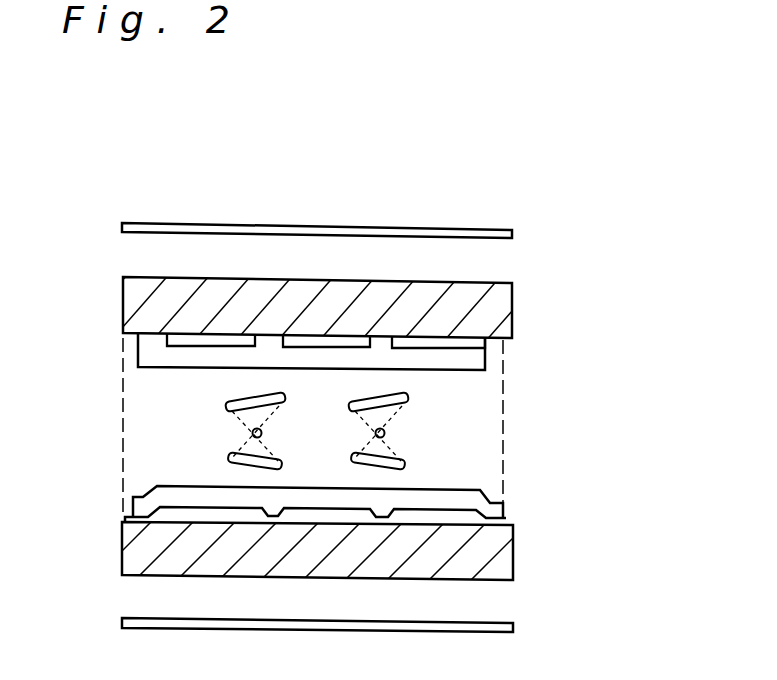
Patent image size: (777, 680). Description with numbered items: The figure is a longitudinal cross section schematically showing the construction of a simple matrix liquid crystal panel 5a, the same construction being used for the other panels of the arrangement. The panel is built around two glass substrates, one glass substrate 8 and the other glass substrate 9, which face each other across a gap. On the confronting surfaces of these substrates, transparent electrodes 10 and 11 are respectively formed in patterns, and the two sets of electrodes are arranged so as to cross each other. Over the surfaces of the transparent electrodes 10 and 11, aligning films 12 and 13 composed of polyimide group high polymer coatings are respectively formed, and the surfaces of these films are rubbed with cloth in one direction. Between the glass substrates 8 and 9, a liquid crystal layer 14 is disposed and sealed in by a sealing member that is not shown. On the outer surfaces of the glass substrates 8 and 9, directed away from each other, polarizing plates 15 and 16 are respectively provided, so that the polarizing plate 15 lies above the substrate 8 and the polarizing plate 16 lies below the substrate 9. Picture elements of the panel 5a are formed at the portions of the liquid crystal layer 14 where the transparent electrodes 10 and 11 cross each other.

The simple matrix liquid crystal panel 5a is at (321, 219).
The polarizing plate 15 is at (512, 233).
The glass substrate 8 is at (492, 305).
The transparent electrode 10 is at (463, 344).
The aligning film 12 is at (463, 361).
The liquid crystal layer 14 is at (218, 431).
The aligning film 13 is at (445, 493).
The transparent electrode 11 is at (487, 515).
The glass substrate 9 is at (473, 547).
The polarizing plate 16 is at (513, 628).